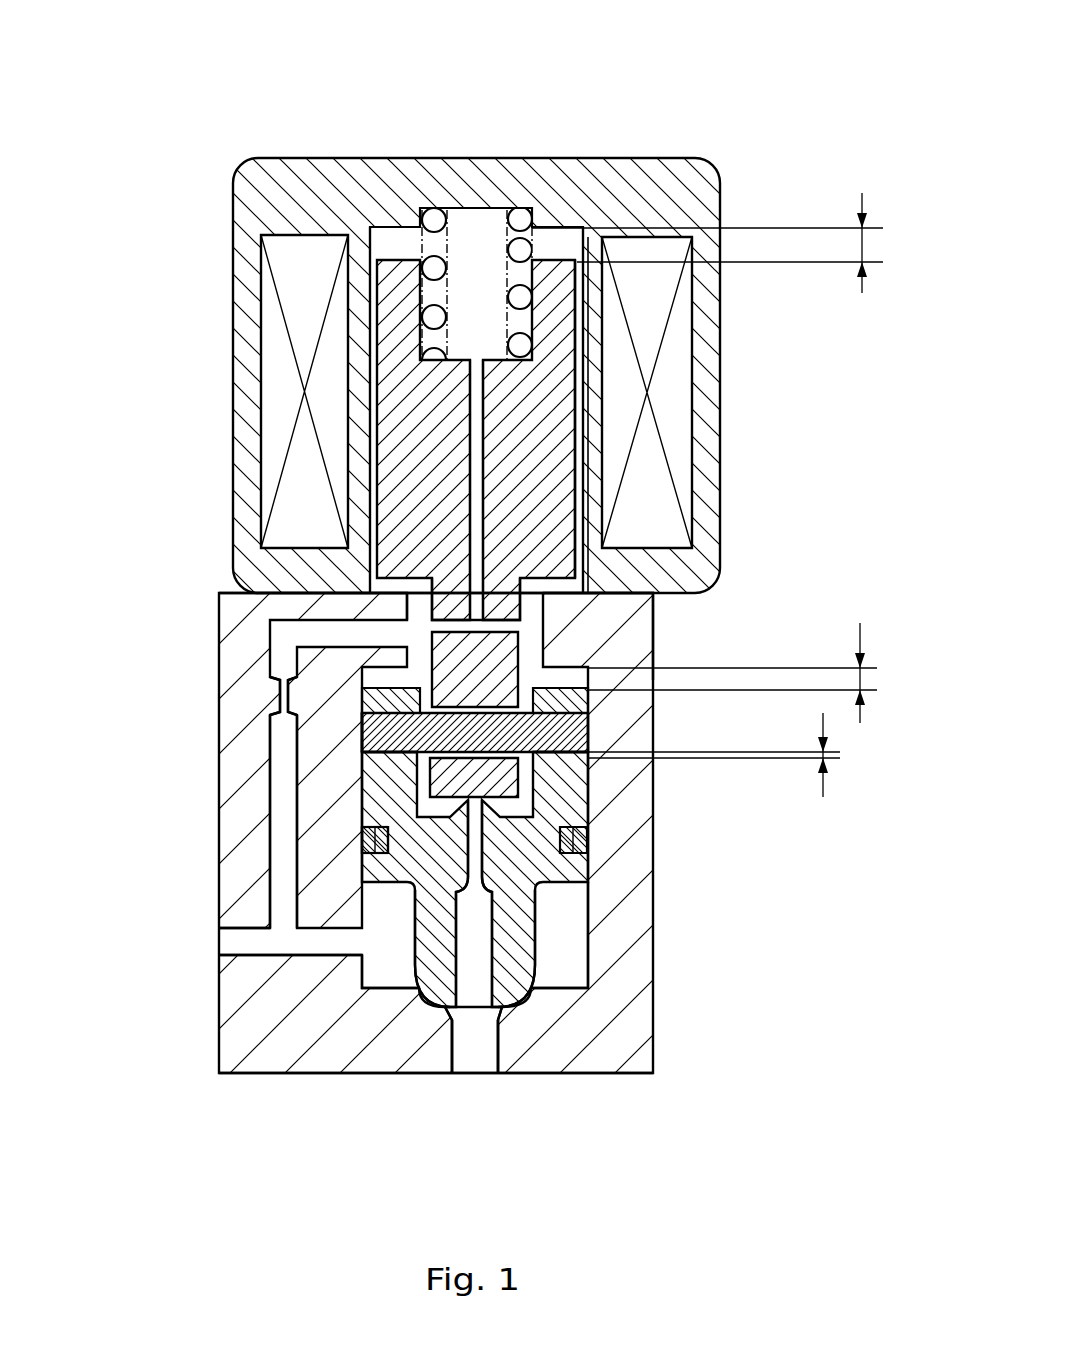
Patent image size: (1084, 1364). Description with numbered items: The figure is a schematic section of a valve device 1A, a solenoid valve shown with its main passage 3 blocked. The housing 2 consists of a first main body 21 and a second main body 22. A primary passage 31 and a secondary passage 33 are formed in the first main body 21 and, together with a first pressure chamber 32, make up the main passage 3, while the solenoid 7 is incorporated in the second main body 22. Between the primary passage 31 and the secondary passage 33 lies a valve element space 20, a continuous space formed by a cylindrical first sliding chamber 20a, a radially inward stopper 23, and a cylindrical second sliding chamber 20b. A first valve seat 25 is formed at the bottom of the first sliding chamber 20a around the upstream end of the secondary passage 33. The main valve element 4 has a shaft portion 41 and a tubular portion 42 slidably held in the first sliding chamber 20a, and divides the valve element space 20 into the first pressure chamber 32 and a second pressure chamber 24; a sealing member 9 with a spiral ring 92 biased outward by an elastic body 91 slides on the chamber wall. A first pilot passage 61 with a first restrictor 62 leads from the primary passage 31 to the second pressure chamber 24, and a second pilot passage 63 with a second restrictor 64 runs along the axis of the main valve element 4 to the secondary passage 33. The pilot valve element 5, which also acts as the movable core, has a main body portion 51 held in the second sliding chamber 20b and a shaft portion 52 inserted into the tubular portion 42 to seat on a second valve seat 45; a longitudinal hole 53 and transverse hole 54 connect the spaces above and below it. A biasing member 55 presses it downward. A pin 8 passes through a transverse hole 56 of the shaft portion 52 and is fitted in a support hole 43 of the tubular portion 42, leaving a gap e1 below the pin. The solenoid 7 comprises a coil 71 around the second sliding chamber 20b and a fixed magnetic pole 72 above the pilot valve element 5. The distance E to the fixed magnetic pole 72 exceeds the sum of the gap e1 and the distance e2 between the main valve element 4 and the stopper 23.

The valve device 1A is at (197, 138).
The housing 2 is at (217, 461).
The main passage 3 is at (397, 1187).
The main valve element 4 is at (605, 866).
The pilot valve element 5 is at (593, 504).
The solenoid 7 is at (405, 50).
The pin 8 is at (575, 733).
The sealing member 9 is at (112, 805).
The valve element space 20 is at (556, 623).
The first sliding chamber 20a is at (565, 948).
The second sliding chamber 20b is at (563, 297).
The first main body 21 is at (247, 1005).
The second main body 22 is at (248, 350).
The stopper 23 is at (565, 648).
The second pressure chamber 24 is at (417, 598).
The first valve seat 25 is at (490, 1020).
The primary passage 31 is at (285, 940).
The first pressure chamber 32 is at (382, 950).
The secondary passage 33 is at (460, 1057).
The shaft portion 41 is at (520, 907).
The tubular portion 42 is at (515, 780).
The support hole 43 is at (372, 742).
The second valve seat 45 is at (495, 778).
The main body portion 51 is at (530, 462).
The shaft portion 52 is at (495, 693).
The longitudinal hole 53 is at (478, 410).
The transverse hole 54 is at (493, 597).
The biasing member 55 is at (515, 248).
The transverse hole 56 is at (370, 727).
The first pilot passage 61 is at (283, 870).
The first restrictor 62 is at (282, 693).
The second pilot passage 63 is at (475, 977).
The second restrictor 64 is at (478, 841).
The coil 71 is at (302, 268).
The fixed magnetic pole 72 is at (395, 218).
The elastic body 91 is at (358, 846).
The spiral ring 92 is at (358, 824).
The distance E is at (717, 243).
The gap e1 is at (727, 755).
The distance e2 is at (746, 673).